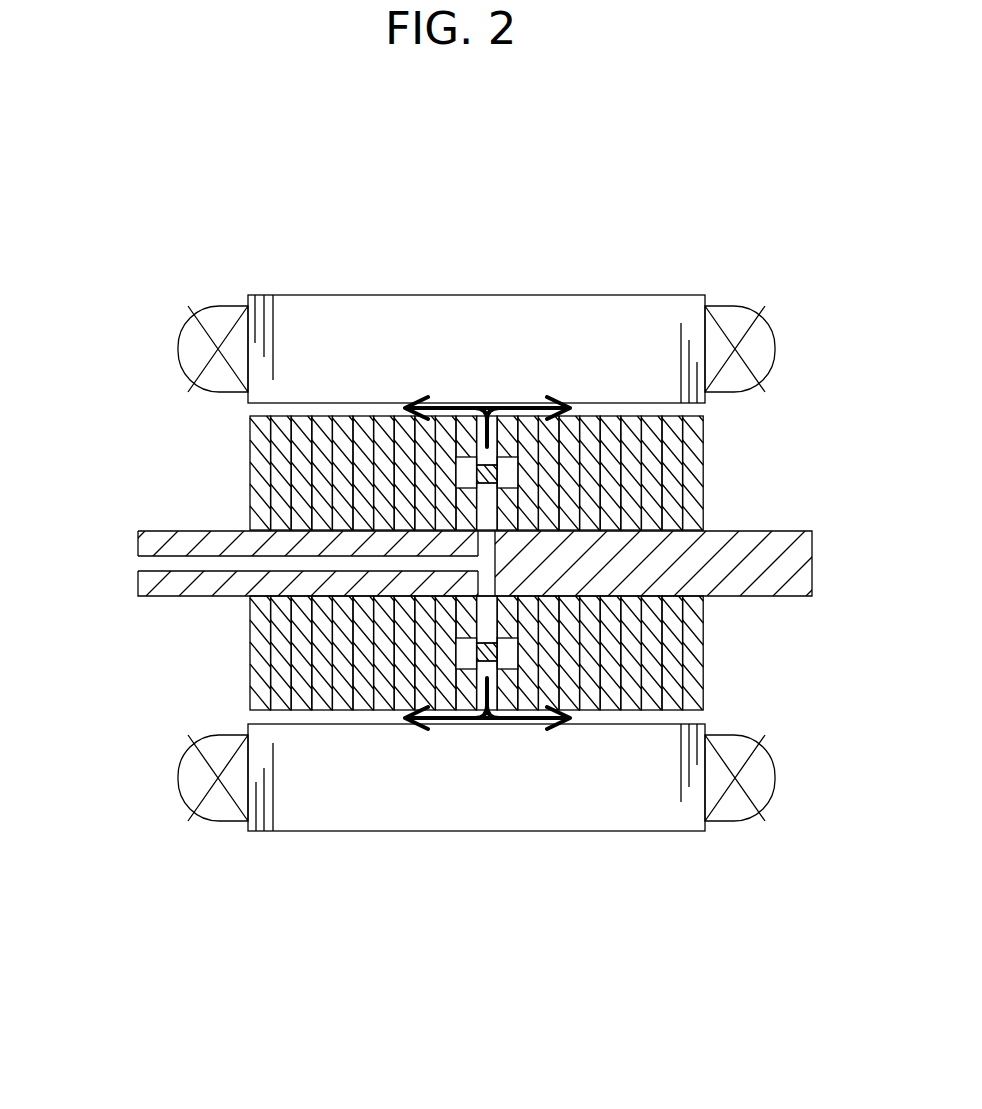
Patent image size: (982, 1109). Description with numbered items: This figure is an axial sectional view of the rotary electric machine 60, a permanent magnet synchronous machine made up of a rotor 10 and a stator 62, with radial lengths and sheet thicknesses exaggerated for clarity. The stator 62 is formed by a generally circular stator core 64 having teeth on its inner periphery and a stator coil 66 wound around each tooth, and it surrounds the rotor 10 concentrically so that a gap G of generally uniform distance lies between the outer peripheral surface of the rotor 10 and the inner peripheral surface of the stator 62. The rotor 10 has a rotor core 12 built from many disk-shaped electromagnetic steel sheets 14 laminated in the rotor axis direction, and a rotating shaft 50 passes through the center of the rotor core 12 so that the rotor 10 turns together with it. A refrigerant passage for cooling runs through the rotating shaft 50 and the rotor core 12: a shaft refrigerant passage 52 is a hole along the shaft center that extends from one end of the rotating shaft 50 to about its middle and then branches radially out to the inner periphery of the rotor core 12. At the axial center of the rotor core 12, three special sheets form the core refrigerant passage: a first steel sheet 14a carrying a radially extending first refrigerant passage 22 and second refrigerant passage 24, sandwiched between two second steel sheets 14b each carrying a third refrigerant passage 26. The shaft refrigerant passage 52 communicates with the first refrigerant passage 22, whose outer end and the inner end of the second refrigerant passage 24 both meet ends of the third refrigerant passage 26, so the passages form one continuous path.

The rotor 10 is at (454, 670).
The rotor core 12 is at (475, 670).
The electromagnetic steel sheet 14 is at (337, 705).
The first steel sheet 14a is at (489, 705).
The second steel sheet 14b is at (455, 705).
The first refrigerant passage 22 is at (488, 512).
The second refrigerant passage 24 is at (498, 440).
The third refrigerant passage 26 is at (463, 465).
The rotating shaft 50 is at (454, 571).
The shaft refrigerant passage 52 is at (147, 563).
The rotary electric machine 60 is at (462, 483).
The stator 62 is at (478, 269).
The stator core 64 is at (399, 305).
The stator coil 66 is at (740, 317).
The gap G is at (693, 717).